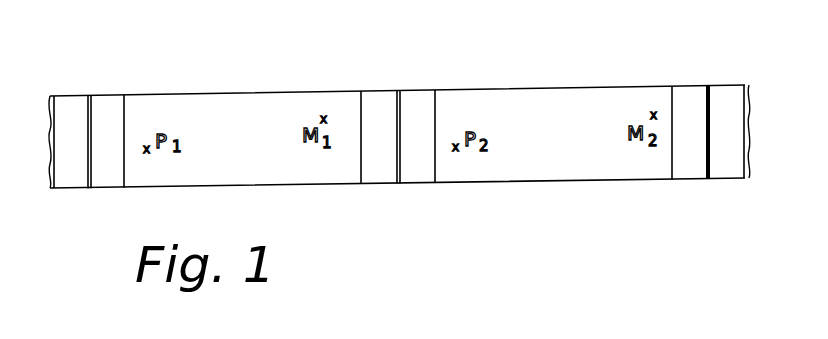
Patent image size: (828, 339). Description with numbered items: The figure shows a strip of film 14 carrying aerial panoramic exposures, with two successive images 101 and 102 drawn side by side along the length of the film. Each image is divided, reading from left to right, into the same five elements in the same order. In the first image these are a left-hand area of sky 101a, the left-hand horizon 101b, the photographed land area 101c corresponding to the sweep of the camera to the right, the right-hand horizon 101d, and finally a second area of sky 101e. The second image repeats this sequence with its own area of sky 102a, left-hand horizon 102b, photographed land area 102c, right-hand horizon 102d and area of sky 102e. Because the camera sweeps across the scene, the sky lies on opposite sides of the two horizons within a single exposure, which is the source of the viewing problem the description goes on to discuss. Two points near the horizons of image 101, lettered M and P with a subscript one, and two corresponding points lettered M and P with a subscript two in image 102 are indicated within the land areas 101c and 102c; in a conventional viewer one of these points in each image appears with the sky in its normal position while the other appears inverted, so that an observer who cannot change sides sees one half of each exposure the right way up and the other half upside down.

The image 101 is at (388, 68).
The image 102 is at (706, 63).
The magnetic tape 14 is at (724, 85).
The area of sky 101a is at (110, 168).
The left-hand horizon 101b is at (128, 167).
The photographed land area 101c is at (268, 153).
The right-hand horizon 101d is at (358, 160).
The area of sky 101e is at (382, 162).
The area of sky 102a is at (420, 158).
The left-hand horizon 102b is at (435, 157).
The photographed land area 102c is at (582, 152).
The right-hand horizon 102d is at (677, 160).
The area of sky 102e is at (693, 160).